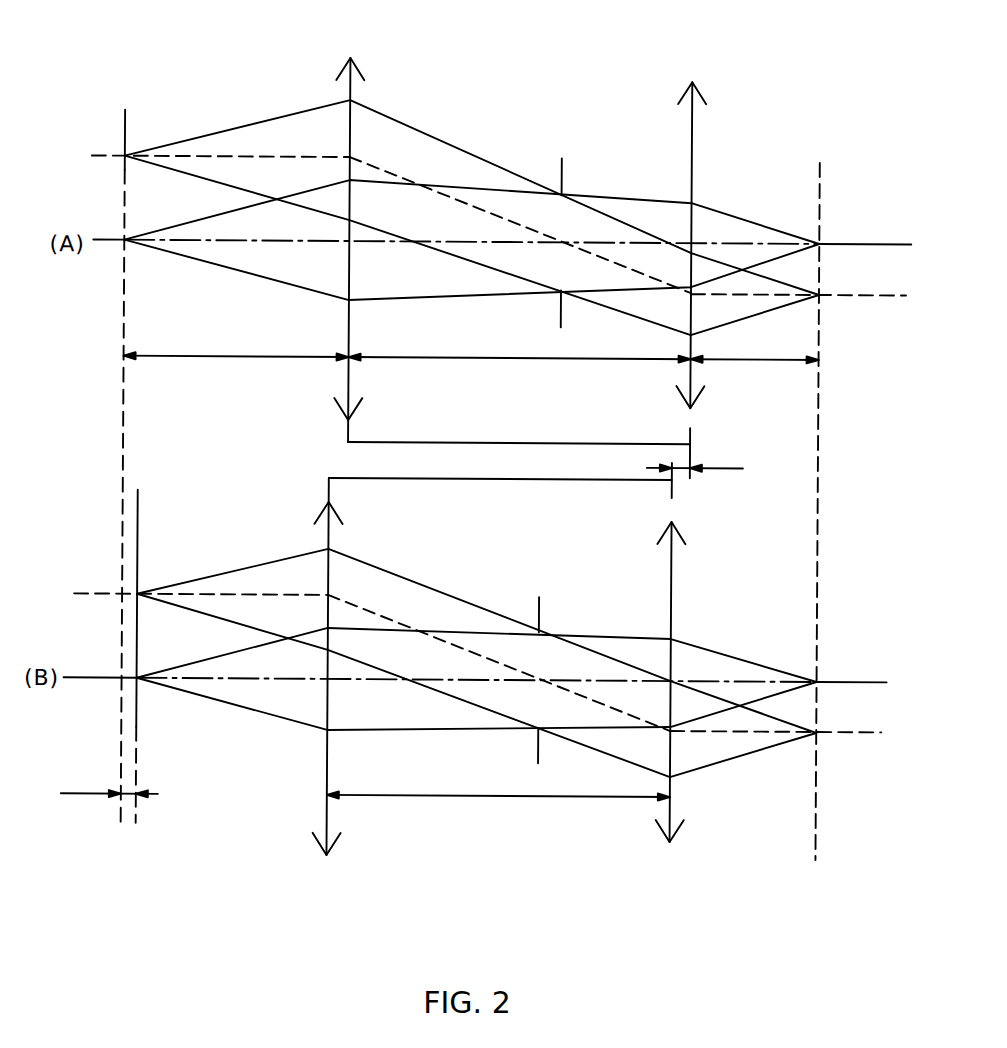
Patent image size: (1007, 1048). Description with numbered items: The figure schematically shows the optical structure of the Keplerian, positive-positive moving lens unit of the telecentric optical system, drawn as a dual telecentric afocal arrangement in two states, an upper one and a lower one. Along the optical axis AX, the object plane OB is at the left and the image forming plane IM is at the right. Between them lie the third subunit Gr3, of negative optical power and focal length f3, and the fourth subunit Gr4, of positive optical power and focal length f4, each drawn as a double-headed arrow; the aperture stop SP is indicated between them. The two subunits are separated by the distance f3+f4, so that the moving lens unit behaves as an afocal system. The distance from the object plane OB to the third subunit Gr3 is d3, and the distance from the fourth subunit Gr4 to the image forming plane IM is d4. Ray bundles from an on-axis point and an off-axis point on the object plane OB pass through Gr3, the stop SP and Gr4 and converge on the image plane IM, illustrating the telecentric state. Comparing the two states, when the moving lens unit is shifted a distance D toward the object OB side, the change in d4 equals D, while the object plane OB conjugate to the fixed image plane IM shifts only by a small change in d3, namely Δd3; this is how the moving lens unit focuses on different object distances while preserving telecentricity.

The object plane OB is at (124, 124).
The third subunit Gr3 is at (342, 462).
The fourth subunit Gr4 is at (684, 465).
The aperture stop SP is at (562, 178).
The image plane IM is at (818, 180).
The optical axis AX is at (866, 242).
The distance from the object plane to the third subunit d3 is at (236, 345).
The distance from the fourth subunit to the image forming plane d4 is at (755, 349).
The focus movement amount D is at (536, 461).